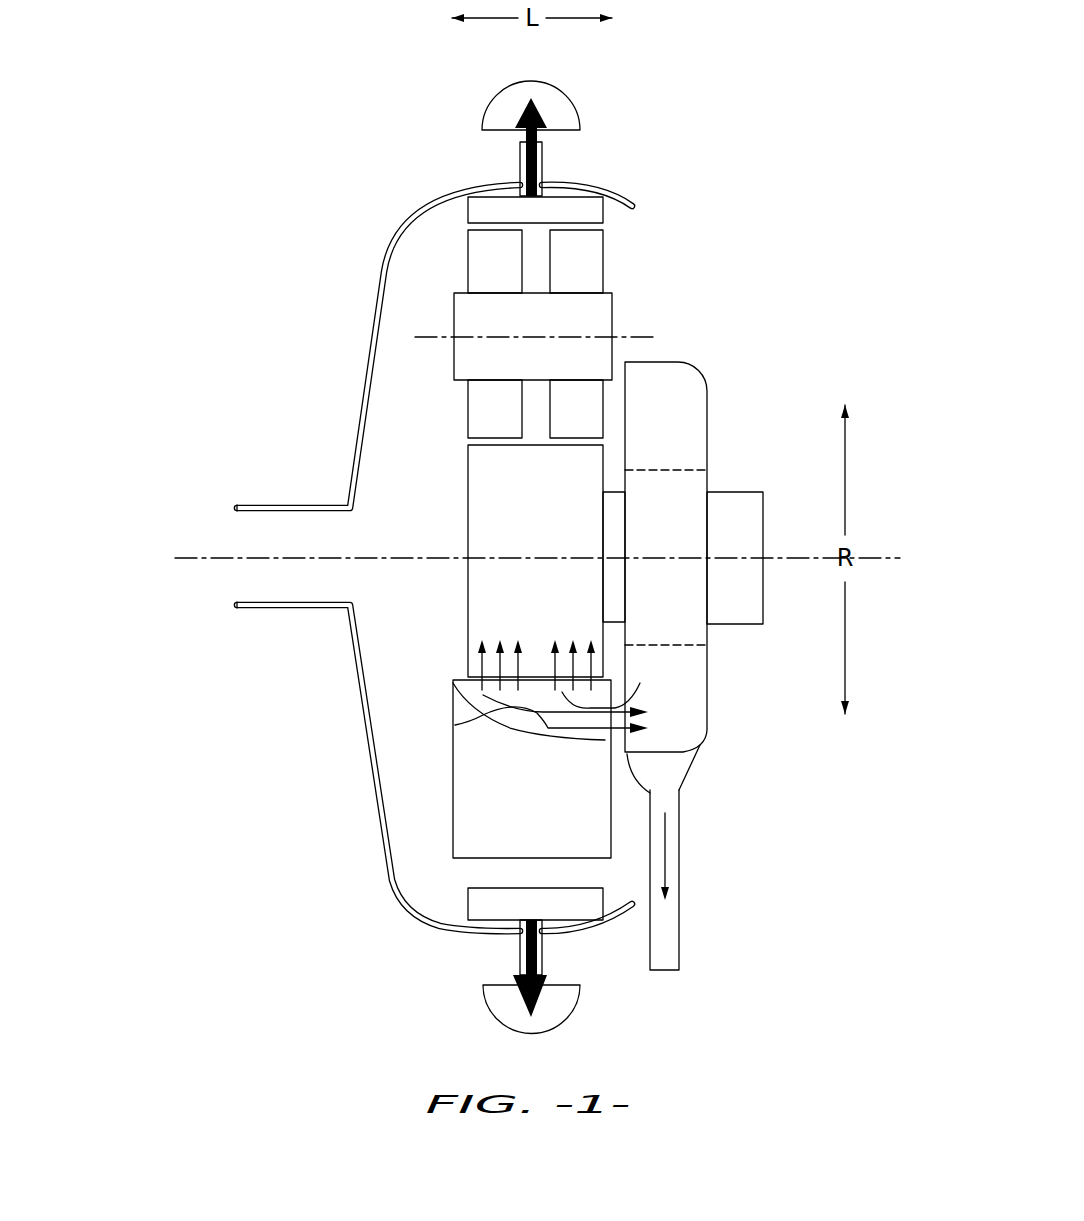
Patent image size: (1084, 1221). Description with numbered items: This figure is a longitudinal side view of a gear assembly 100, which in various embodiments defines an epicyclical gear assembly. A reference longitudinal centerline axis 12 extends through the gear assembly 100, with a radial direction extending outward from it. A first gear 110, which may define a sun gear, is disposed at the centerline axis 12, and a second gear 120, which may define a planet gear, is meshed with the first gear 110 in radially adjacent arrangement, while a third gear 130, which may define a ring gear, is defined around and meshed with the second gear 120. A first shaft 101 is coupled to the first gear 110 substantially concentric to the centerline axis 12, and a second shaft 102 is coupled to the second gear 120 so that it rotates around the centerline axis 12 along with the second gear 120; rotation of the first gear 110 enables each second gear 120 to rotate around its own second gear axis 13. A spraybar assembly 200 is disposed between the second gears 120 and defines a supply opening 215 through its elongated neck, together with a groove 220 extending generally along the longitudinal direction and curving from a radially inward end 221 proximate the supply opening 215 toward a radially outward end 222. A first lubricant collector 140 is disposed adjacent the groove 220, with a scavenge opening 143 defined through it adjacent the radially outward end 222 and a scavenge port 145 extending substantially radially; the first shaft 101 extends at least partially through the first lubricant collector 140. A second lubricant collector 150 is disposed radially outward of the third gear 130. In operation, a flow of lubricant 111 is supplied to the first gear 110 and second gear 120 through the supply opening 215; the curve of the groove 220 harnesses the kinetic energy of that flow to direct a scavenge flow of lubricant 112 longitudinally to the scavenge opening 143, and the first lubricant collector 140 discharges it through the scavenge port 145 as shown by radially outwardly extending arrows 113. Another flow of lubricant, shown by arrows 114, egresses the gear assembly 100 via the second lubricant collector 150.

The gear assembly 100 is at (523, 549).
The reference longitudinal centerline axis 12 is at (222, 558).
The second gear axis 13 is at (646, 335).
The first shaft 101 is at (732, 624).
The second shaft 102 is at (355, 442).
The first gear 110 is at (487, 480).
The flow of lubricant 111 is at (551, 650).
The scavenge flow of lubricant 112 is at (626, 688).
The radially outwardly extending arrows 113 is at (668, 842).
The arrows 114 is at (537, 980).
The second gear 120 is at (473, 355).
The third gear 130 is at (567, 203).
The first lubricant collector 140 is at (698, 702).
The scavenge opening 143 is at (672, 798).
The scavenge port 145 is at (680, 925).
The second lubricant collector 150 is at (542, 84).
The spraybar assembly 200 is at (470, 812).
The supply opening 215 is at (537, 667).
The groove 220 is at (455, 725).
The radially inward end 221 is at (453, 682).
The radially outward end 222 is at (603, 748).